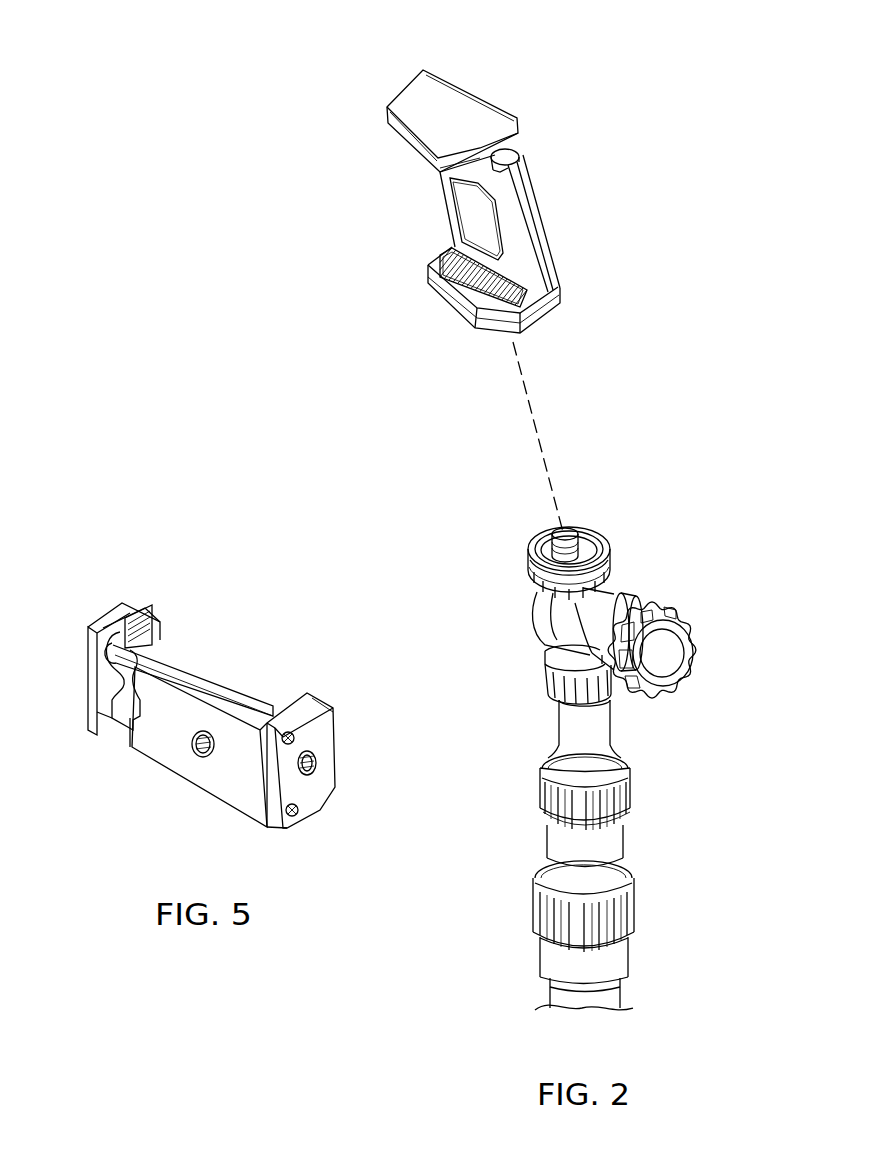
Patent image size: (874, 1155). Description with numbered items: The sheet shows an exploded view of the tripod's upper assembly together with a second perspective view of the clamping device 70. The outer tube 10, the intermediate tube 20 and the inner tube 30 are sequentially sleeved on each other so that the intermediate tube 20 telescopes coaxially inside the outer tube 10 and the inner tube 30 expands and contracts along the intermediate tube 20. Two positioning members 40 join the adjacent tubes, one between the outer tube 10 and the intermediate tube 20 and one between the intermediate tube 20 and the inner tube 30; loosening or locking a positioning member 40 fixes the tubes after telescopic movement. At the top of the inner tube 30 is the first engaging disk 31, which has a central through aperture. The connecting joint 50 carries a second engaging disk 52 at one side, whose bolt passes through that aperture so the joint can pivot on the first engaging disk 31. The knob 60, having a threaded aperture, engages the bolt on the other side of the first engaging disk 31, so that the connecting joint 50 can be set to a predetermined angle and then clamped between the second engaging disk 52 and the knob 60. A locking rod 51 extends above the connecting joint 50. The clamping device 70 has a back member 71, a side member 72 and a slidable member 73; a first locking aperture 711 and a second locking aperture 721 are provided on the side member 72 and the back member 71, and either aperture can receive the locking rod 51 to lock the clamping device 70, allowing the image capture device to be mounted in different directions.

In FIG. 2, the outer tube 10 is at (625, 988).
In FIG. 2, the intermediate tube 20 is at (604, 854).
In FIG. 2, the inner tube 30 is at (609, 720).
In FIG. 2, the first engaging disk 31 is at (548, 676).
In FIG. 2, the positioning member 40 is at (546, 760).
In FIG. 2, the connecting joint 50 is at (529, 527).
In FIG. 2, the locking rod 51 is at (566, 530).
In FIG. 2, the second engaging disk 52 is at (538, 613).
In FIG. 2, the knob 60 is at (699, 626).
In FIG. 2, the clamping device 70 is at (399, 75).
In FIG. 5, the clamping device 70 is at (82, 720).
In FIG. 2, the back member 71 is at (537, 228).
In FIG. 5, the back member 71 is at (205, 682).
In FIG. 2, the side member 72 is at (458, 314).
In FIG. 5, the side member 72 is at (307, 703).
In FIG. 2, the slidable member 73 is at (470, 103).
In FIG. 5, the slidable member 73 is at (115, 612).
In FIG. 5, the first locking aperture 711 is at (203, 752).
In FIG. 5, the second locking aperture 721 is at (320, 760).